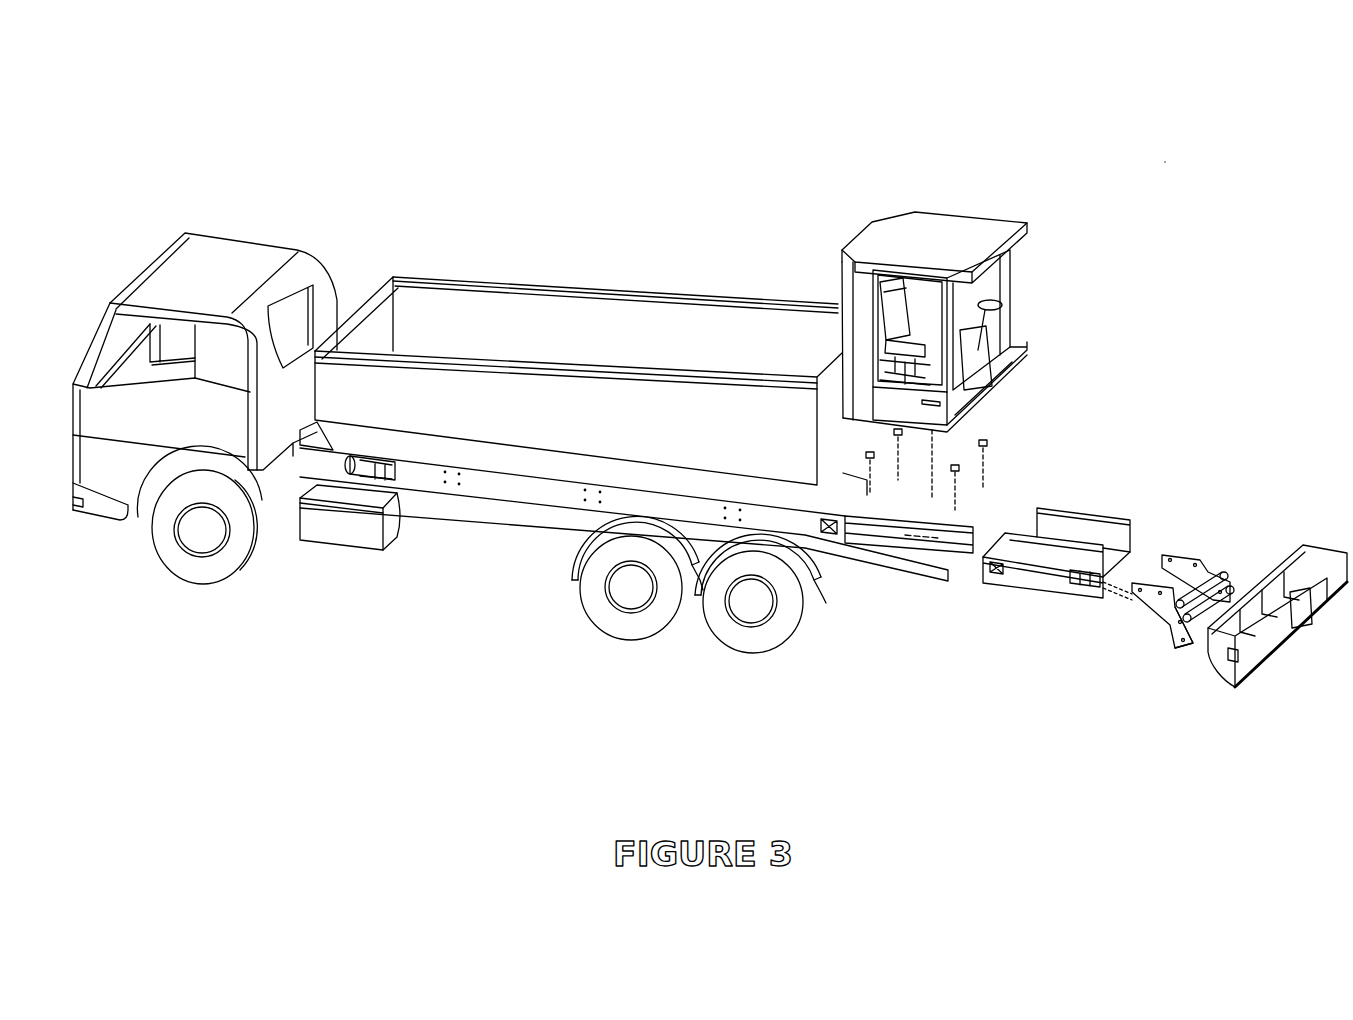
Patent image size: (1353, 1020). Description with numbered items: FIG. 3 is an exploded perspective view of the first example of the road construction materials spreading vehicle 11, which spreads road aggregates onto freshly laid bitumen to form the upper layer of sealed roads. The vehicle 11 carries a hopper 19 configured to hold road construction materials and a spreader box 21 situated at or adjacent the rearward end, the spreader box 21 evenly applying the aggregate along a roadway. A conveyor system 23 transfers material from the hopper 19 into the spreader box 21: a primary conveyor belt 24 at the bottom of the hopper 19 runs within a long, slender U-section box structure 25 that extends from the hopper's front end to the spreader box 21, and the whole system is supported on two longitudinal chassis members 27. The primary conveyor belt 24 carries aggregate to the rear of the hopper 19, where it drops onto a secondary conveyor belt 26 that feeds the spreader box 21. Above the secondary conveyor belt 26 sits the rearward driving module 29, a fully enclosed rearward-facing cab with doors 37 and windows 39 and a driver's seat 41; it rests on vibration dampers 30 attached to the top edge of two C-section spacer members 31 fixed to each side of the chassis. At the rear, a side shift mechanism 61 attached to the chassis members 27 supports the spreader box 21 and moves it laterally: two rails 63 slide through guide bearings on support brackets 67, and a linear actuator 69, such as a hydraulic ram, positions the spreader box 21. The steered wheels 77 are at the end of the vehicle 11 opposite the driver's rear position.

The road construction materials spreading vehicle 11 is at (1172, 159).
The hopper 19 is at (476, 273).
The spreader box 21 is at (1317, 545).
The conveyor system 23 is at (215, 238).
The primary conveyor belt 24 is at (898, 431).
The box structure 25 is at (465, 484).
The secondary conveyor belt 26 is at (996, 592).
The longitudinal chassis members 27 is at (945, 560).
The rearward driving module 29 is at (963, 213).
The vibration dampers 30 is at (1008, 444).
The spacer members 31 is at (1088, 508).
The doors 37 is at (878, 408).
The windows 39 is at (1040, 318).
The driver's seat 41 is at (897, 300).
The side shift mechanism 61 is at (1216, 544).
The rails 63 is at (1190, 557).
The support brackets 67 is at (1137, 610).
The linear actuator 69 is at (1192, 630).
The steered wheels 77 is at (168, 565).